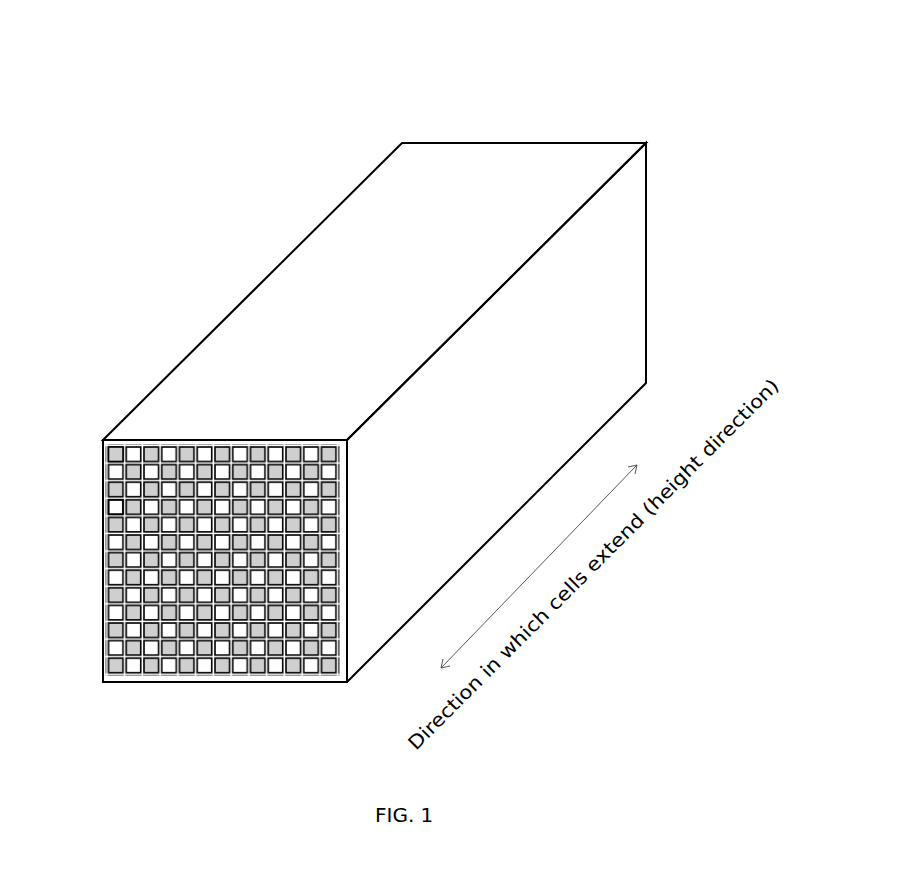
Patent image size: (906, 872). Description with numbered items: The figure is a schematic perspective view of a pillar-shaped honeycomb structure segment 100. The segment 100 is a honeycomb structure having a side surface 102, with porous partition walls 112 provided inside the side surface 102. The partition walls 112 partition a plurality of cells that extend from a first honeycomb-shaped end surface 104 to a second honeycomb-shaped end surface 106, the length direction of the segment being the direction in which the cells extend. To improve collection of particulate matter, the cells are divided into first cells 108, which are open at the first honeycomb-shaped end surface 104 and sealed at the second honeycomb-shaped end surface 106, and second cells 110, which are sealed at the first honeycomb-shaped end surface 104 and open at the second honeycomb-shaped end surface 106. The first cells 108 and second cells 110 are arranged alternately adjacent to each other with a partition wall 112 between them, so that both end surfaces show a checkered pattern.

The pillar-shaped honeycomb structure segment 100 is at (431, 114).
The side surface 102 is at (627, 348).
The first honeycomb-shaped end surface 104 is at (103, 645).
The second honeycomb-shaped end surface 106 is at (515, 143).
The first cells 108 is at (103, 558).
The second cells 110 is at (103, 505).
The partition walls 112 is at (103, 460).